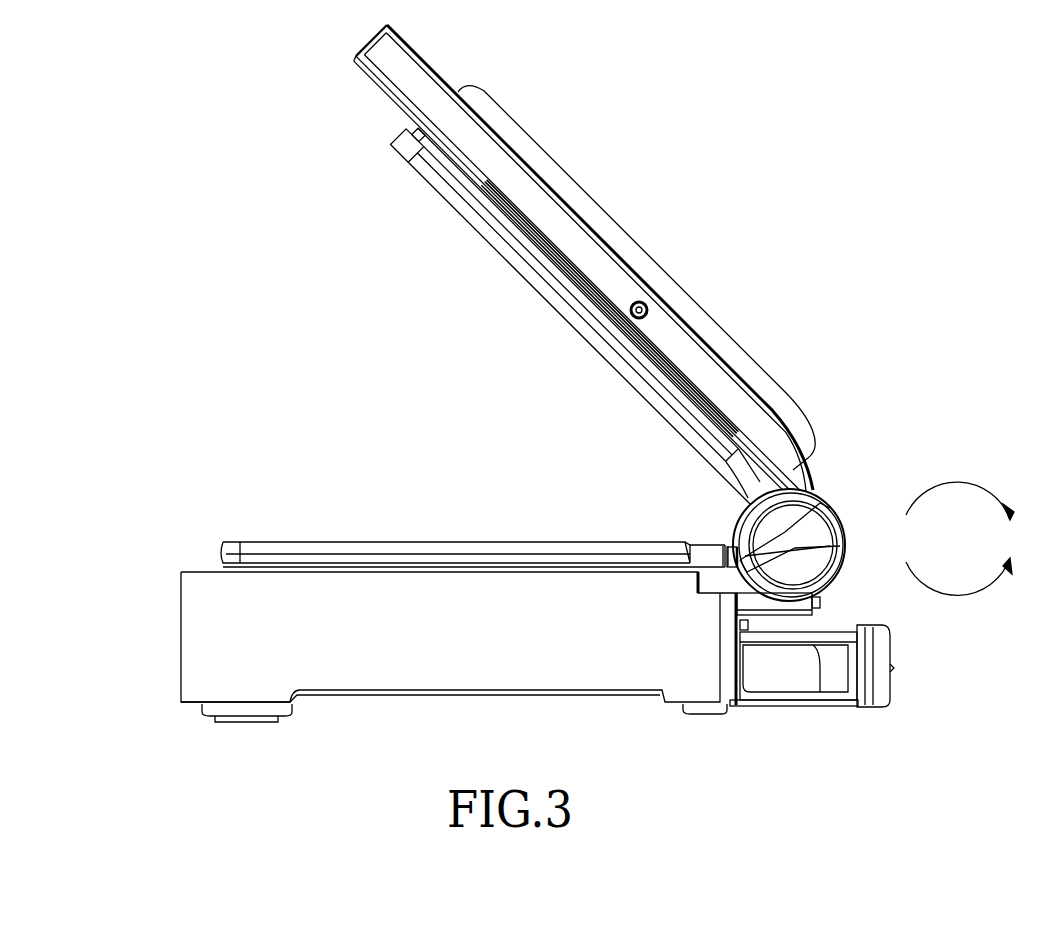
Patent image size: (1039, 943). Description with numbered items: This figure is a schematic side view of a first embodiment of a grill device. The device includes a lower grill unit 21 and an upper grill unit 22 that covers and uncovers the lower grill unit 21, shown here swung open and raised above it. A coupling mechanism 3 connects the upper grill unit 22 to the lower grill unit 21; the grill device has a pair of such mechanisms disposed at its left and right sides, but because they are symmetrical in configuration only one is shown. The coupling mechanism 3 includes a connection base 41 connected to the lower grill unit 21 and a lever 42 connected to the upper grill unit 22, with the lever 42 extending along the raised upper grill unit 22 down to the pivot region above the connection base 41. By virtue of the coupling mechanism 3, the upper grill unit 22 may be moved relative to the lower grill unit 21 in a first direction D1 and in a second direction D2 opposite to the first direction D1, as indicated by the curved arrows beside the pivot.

The coupling mechanism 3 is at (841, 485).
The lower grill unit 21 is at (555, 633).
The upper grill unit 22 is at (645, 283).
The connection base 41 is at (723, 590).
The lever 42 is at (733, 412).
The first direction D1 is at (960, 478).
The second direction D2 is at (965, 595).